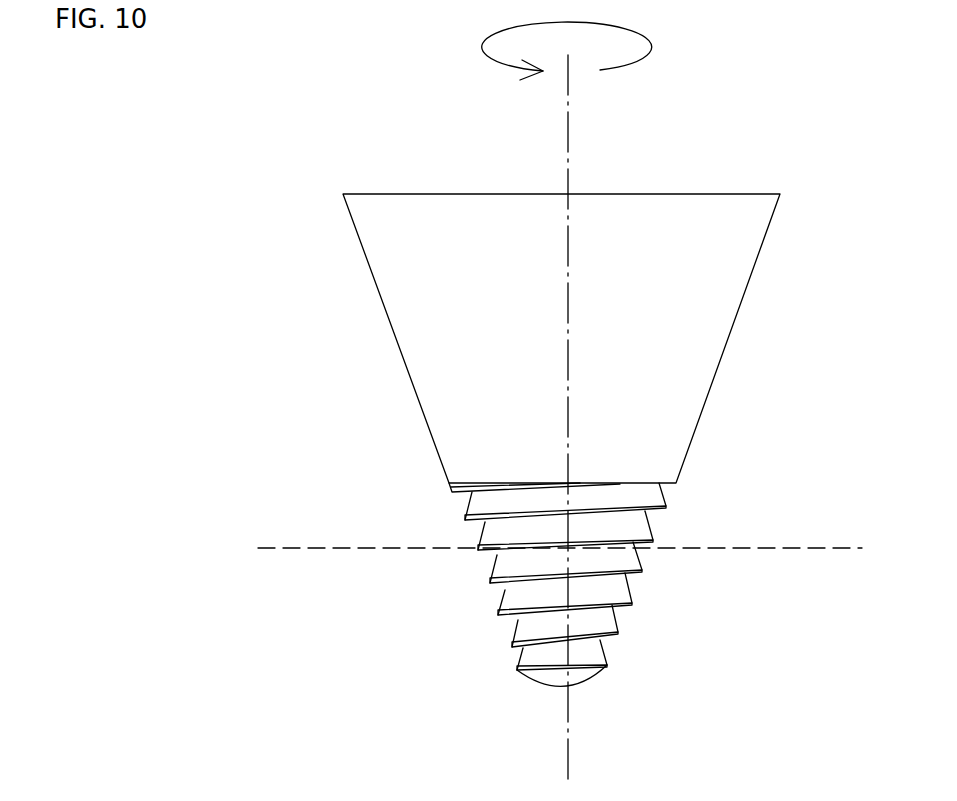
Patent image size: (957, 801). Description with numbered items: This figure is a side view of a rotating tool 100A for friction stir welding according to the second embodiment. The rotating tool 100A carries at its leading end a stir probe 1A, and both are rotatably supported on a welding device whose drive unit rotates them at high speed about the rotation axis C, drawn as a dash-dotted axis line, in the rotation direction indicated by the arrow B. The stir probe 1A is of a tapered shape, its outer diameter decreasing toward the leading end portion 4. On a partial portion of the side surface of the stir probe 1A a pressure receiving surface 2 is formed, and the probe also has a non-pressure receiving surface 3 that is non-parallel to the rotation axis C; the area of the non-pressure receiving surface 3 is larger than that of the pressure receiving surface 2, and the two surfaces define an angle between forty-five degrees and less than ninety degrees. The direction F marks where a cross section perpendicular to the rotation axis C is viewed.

The arrow showing the rotation direction B is at (653, 40).
The rotation axis C is at (568, 136).
The rotating tool 100A is at (373, 275).
The viewing direction F is at (292, 546).
The stir probe 1A is at (473, 535).
The pressure receiving surface 2 is at (498, 588).
The non-pressure receiving surface 3 is at (498, 602).
The leading end portion 4 is at (540, 690).